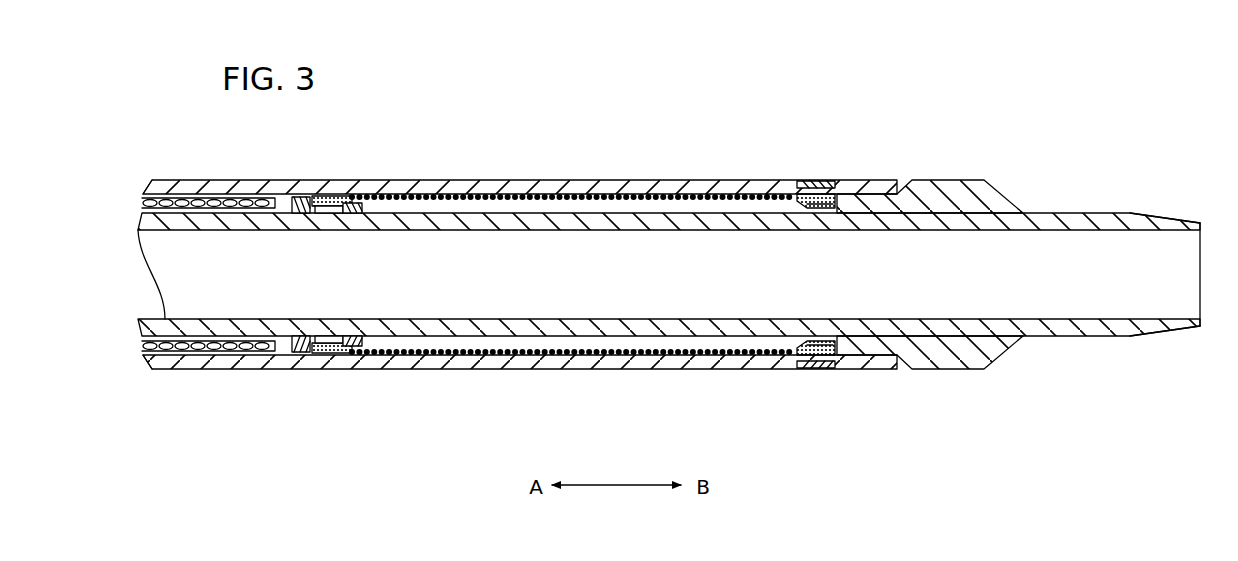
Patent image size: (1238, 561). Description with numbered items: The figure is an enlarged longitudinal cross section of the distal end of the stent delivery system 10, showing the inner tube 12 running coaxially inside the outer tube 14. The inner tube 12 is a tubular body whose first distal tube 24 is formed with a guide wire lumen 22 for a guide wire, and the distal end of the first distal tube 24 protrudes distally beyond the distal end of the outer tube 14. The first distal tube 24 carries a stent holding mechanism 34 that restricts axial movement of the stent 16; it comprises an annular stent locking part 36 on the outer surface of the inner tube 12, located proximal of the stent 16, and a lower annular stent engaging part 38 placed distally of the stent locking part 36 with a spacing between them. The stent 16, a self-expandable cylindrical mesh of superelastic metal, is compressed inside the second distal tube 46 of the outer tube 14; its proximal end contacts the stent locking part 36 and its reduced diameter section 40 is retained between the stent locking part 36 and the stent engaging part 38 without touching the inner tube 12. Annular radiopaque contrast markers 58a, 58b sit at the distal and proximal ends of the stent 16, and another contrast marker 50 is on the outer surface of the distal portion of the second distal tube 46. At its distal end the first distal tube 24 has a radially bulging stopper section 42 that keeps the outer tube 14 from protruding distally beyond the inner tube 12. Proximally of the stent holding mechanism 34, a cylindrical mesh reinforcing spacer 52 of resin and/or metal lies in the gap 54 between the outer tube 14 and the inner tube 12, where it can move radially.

The stent delivery system 10 is at (1085, 141).
The inner tube 12 is at (1147, 211).
The outer tube 14 is at (562, 178).
The stent 16 is at (659, 191).
The guide wire lumen 22 is at (178, 280).
The first distal tube 24 is at (1152, 327).
The stent holding mechanism 34 is at (298, 196).
The stent locking part 36 is at (292, 353).
The stent engaging part 38 is at (367, 342).
The reduced diameter section 40 is at (336, 347).
The stopper section 42 is at (940, 358).
The second distal tube 46 is at (583, 358).
The contrast marker 50 is at (823, 368).
The reinforcing spacer 52 is at (206, 352).
The gap 54 is at (206, 198).
The contrast marker 58a is at (822, 181).
The contrast marker 58b is at (331, 195).